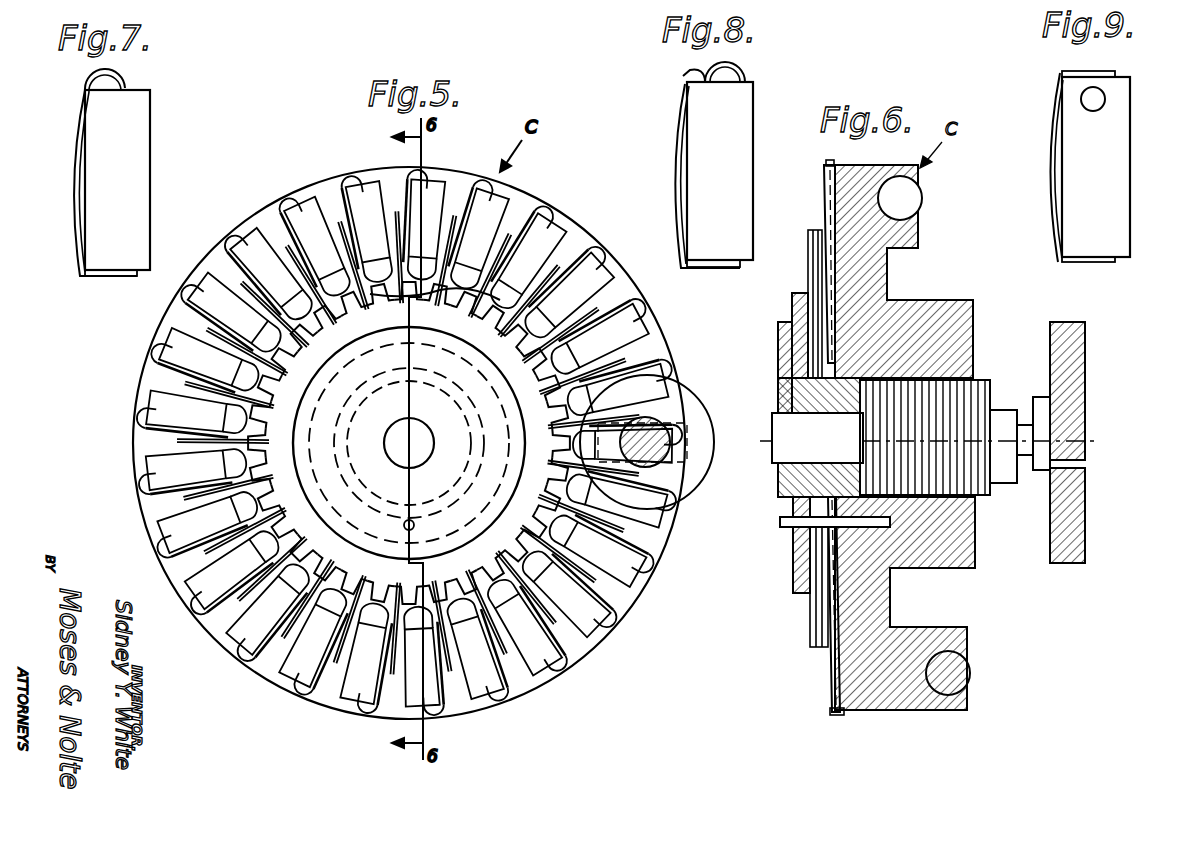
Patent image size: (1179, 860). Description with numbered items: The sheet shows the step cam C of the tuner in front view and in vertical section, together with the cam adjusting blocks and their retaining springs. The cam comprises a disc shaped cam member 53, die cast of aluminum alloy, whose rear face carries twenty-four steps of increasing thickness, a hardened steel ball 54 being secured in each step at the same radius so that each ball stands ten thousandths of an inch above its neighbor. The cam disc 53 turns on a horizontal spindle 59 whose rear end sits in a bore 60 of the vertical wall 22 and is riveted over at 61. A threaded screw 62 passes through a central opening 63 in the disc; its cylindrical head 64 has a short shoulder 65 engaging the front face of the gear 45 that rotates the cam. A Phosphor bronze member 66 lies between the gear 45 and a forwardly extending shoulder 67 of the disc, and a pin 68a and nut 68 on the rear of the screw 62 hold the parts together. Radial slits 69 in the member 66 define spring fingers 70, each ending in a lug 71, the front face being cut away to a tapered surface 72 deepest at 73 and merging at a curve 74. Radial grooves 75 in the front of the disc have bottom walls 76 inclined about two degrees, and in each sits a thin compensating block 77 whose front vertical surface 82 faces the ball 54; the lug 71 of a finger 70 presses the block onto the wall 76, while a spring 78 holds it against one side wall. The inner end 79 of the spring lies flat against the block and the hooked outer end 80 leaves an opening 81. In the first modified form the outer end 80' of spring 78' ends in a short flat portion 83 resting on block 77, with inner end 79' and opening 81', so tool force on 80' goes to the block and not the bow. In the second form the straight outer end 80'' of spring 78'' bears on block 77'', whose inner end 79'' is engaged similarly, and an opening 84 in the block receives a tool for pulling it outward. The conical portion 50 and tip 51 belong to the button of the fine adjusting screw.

In FIG. 6, the vertical wall 22 is at (1072, 565).
In FIG. 5, the gear 45 is at (320, 568).
In FIG. 6, the gear 45 is at (795, 308).
In FIG. 5, the conical shaped intermediate portion 50 is at (690, 480).
In FIG. 5, the tip 51 is at (645, 468).
In FIG. 5, the cam member 53 is at (585, 245).
In FIG. 6, the cam member 53 is at (880, 175).
In FIG. 6, the hardened steel ball 54 is at (922, 198).
In FIG. 6, the horizontal spindle 59 is at (775, 440).
In FIG. 6, the bore 60 is at (1065, 392).
In FIG. 6, the riveted end 61 is at (1085, 445).
In FIG. 5, the threaded screw 62 is at (470, 445).
In FIG. 6, the threaded screw 62 is at (945, 385).
In FIG. 5, the opening 63 is at (395, 455).
In FIG. 6, the opening 63 is at (838, 380).
In FIG. 5, the cylindrical head 64 is at (350, 540).
In FIG. 6, the cylindrical head 64 is at (780, 365).
In FIG. 5, the shoulder 65 is at (310, 410).
In FIG. 6, the shoulder 65 is at (790, 335).
In FIG. 5, the resilient member 66 is at (503, 328).
In FIG. 6, the resilient member 66 is at (796, 271).
In FIG. 5, the forwardly extending shoulder 67 is at (480, 395).
In FIG. 6, the forwardly extending shoulder 67 is at (818, 380).
In FIG. 6, the nut 68 is at (970, 548).
In FIG. 5, the pin 68a is at (415, 525).
In FIG. 6, the pin 68a is at (785, 524).
In FIG. 5, the radial slits 69 is at (340, 345).
In FIG. 5, the spring fingers 70 is at (330, 330).
In FIG. 6, the spring fingers 70 is at (808, 255).
In FIG. 5, the lug 71 is at (350, 230).
In FIG. 6, the lug 71 is at (815, 235).
In FIG. 5, the tapered surface 72 is at (320, 265).
In FIG. 6, the tapered surface 72 is at (806, 245).
In FIG. 5, the deepest point of tapered surface 73 is at (290, 280).
In FIG. 6, the deepest point of tapered surface 73 is at (808, 235).
In FIG. 5, the curve 74 is at (285, 325).
In FIG. 5, the radial grooves 75 is at (440, 180).
In FIG. 6, the radial grooves 75 is at (822, 170).
In FIG. 6, the bottom wall 76 is at (840, 190).
In FIG. 5, the compensating block 77 is at (408, 445).
In FIG. 6, the compensating block 77 is at (813, 434).
In FIG. 7, the compensating block 77 is at (138, 180).
In FIG. 8, the compensating block 77 is at (739, 171).
In FIG. 5, the spring 78 is at (454, 466).
In FIG. 6, the spring 78 is at (839, 462).
In FIG. 7, the spring 78 is at (82, 172).
In FIG. 5, the inner end of spring 79 is at (435, 298).
In FIG. 7, the inner end of spring 79 is at (111, 290).
In FIG. 5, the outer end of spring 80 is at (377, 161).
In FIG. 6, the outer end of spring 80 is at (827, 443).
In FIG. 7, the outer end of spring 80 is at (146, 70).
In FIG. 5, the opening 81 is at (415, 448).
In FIG. 7, the opening 81 is at (70, 73).
In FIG. 6, the front vertical surface 82 is at (820, 195).
In FIG. 8, the short flat portion 83 is at (684, 74).
In FIG. 9, the opening 84 is at (1097, 98).
In FIG. 9, the compensating block 77'' is at (1116, 167).
In FIG. 8, the spring 78' is at (688, 176).
In FIG. 9, the spring 78'' is at (1036, 167).
In FIG. 8, the inner end of spring 79' is at (713, 280).
In FIG. 9, the inner end of spring 79'' is at (1101, 274).
In FIG. 8, the outer end of spring 80' is at (751, 63).
In FIG. 9, the outer end of spring 80'' is at (1109, 58).
In FIG. 8, the opening 81' is at (690, 60).